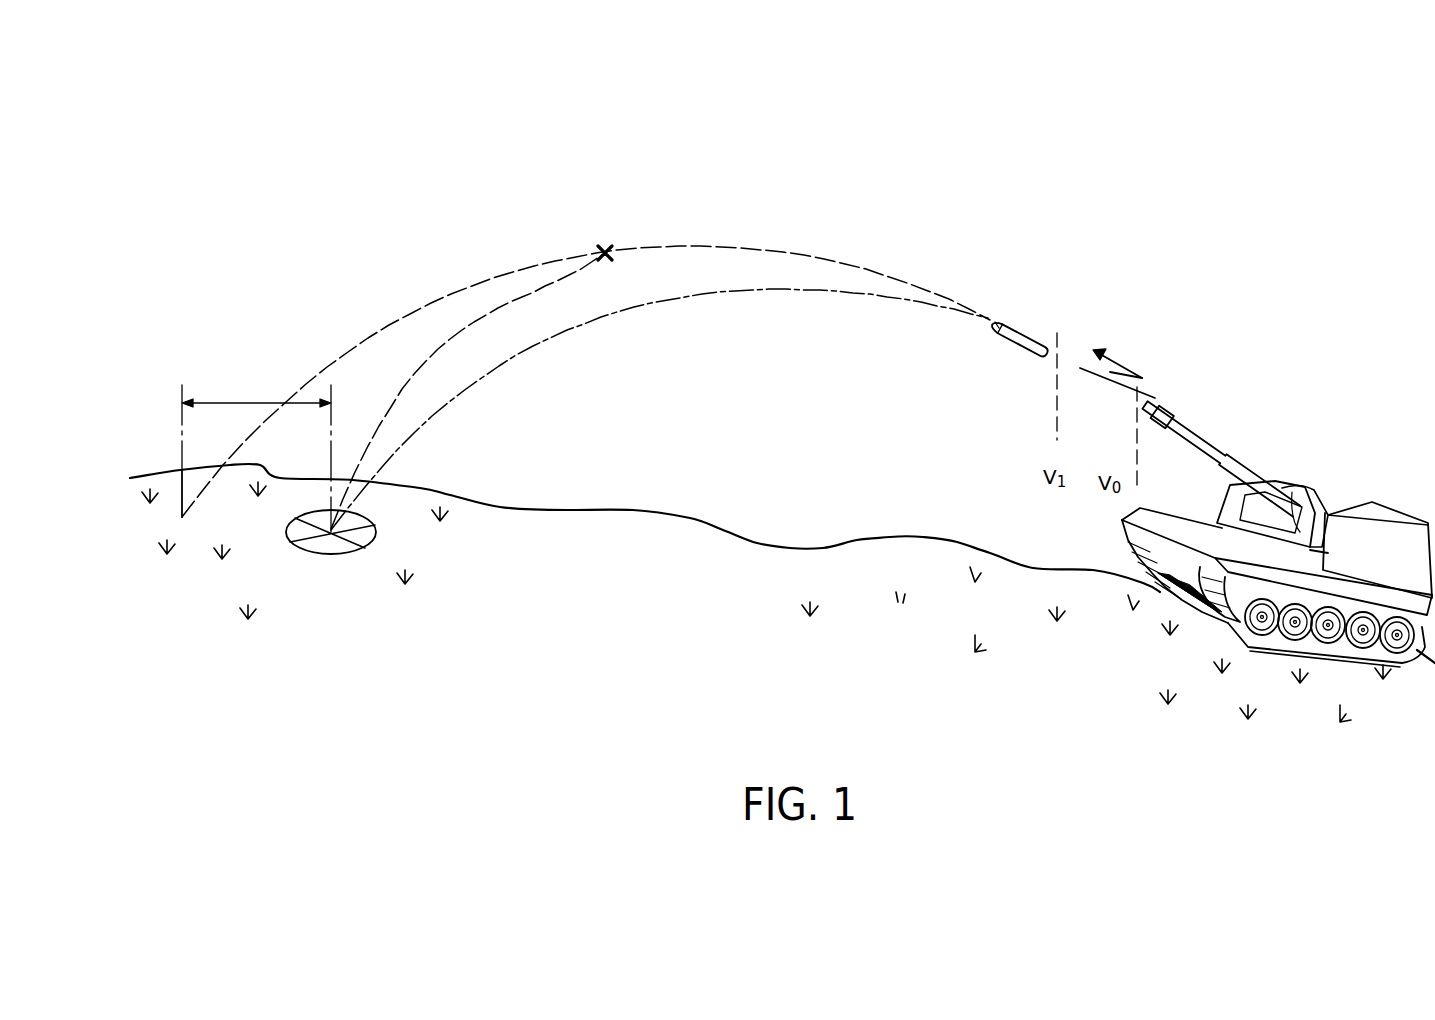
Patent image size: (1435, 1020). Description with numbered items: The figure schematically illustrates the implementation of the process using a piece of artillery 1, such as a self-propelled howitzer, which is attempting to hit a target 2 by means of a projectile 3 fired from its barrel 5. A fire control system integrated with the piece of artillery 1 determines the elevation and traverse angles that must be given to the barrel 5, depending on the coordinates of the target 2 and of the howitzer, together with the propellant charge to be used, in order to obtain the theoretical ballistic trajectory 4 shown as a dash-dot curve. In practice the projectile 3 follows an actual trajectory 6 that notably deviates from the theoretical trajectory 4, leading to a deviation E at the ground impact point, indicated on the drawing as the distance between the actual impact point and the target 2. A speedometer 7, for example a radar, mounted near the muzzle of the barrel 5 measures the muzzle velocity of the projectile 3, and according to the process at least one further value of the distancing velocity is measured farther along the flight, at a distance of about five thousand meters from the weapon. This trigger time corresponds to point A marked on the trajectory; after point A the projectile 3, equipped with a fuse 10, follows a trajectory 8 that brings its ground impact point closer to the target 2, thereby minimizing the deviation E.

The piece of artillery 1 is at (1330, 478).
The target 2 is at (332, 552).
The projectile 3 is at (1027, 327).
The theoretical ballistic trajectory 4 is at (733, 292).
The barrel 5 is at (1193, 423).
The actual trajectory 6 is at (680, 245).
The speedometer 7 is at (1175, 396).
The trajectory 8 is at (450, 338).
The fuse 10 is at (994, 322).
The point A is at (604, 240).
The deviation E is at (256, 455).